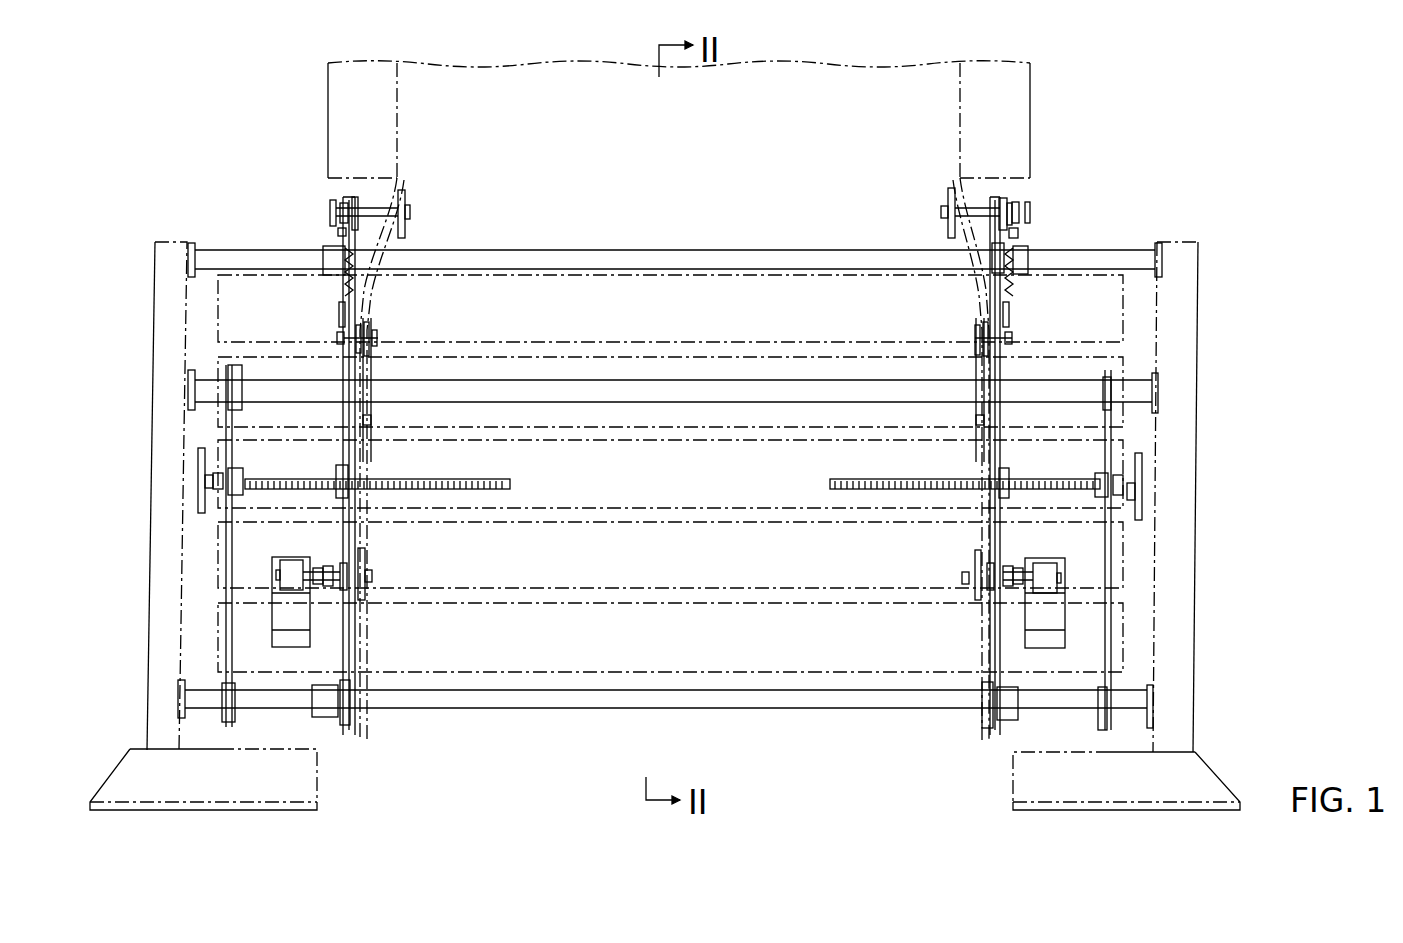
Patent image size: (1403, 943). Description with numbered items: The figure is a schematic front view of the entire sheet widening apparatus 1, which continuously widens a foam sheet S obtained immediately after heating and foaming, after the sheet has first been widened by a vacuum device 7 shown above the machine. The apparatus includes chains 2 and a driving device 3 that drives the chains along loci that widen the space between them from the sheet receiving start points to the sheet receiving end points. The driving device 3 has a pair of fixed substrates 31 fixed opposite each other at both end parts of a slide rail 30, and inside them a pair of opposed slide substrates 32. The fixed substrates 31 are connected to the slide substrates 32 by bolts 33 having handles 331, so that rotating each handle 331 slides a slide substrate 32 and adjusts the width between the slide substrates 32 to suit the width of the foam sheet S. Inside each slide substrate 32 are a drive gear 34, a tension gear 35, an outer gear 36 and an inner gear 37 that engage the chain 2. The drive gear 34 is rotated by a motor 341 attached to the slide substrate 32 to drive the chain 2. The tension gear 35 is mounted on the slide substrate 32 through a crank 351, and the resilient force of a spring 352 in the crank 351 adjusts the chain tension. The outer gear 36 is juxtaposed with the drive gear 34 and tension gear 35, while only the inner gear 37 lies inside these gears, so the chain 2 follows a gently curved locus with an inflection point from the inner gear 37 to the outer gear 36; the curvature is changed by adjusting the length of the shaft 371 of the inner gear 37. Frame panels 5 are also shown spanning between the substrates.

The sheet widening apparatus 1 is at (222, 70).
The chains 2 is at (397, 243).
The driving device 3 is at (327, 217).
The frame panels 5 is at (1123, 327).
The vacuum device 7 is at (328, 108).
The slide rail 30 is at (197, 260).
The fixed substrates 31 is at (227, 730).
The slide substrates 32 is at (343, 730).
The bolts 33 is at (510, 477).
The handles 331 is at (198, 483).
The drive gear 34 is at (367, 557).
The motor 341 is at (287, 570).
The tension gear 35 is at (367, 413).
The crank 351 is at (367, 370).
The spring 352 is at (333, 290).
The outer gear 36 is at (373, 322).
The inner gear 37 is at (405, 188).
The shaft 371 is at (373, 203).
The foam sheet S is at (1007, 203).